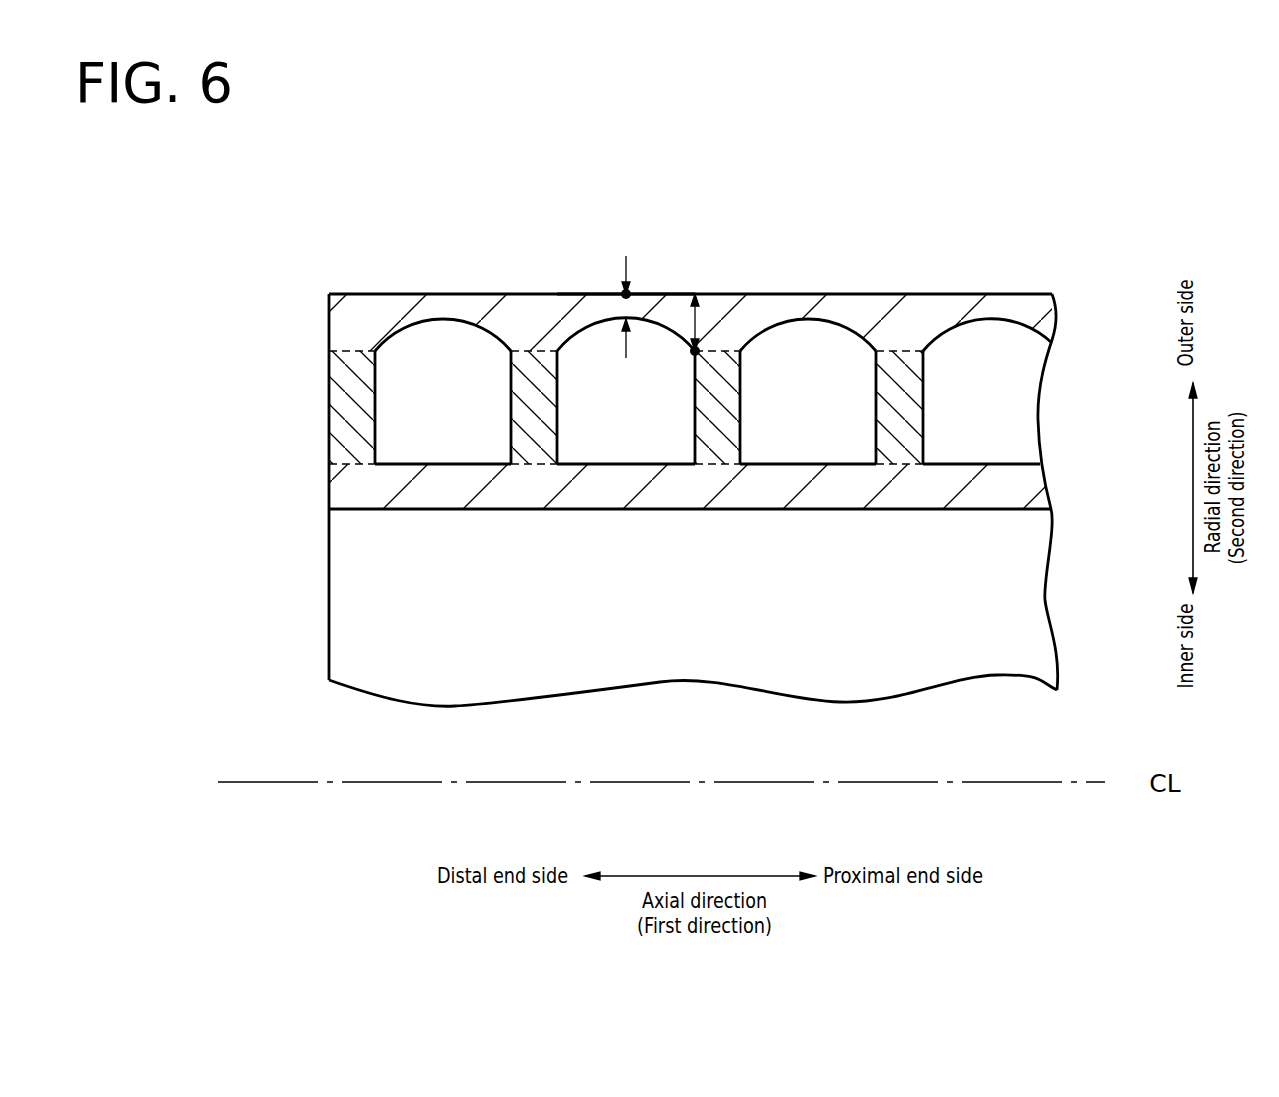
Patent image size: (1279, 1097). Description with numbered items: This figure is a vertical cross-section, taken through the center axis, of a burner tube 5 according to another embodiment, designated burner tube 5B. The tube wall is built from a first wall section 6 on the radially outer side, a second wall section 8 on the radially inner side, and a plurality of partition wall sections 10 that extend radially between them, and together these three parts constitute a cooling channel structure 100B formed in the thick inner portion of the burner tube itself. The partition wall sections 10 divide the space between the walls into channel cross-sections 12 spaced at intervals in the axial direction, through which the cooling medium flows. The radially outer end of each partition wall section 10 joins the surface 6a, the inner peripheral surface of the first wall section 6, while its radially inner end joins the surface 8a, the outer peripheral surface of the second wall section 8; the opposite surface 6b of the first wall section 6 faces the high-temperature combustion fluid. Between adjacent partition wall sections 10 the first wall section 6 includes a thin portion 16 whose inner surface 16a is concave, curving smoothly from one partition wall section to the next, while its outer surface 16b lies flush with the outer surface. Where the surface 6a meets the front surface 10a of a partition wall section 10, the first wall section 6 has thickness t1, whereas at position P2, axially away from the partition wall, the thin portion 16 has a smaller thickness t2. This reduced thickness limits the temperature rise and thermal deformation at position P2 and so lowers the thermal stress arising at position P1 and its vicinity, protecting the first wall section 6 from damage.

The cooling channel structure 100B is at (1016, 168).
The burner tube 5 is at (922, 134).
The burner tube 5B is at (693, 382).
The first wall section 6 is at (463, 308).
The surface of the first wall section 6a is at (681, 336).
The surface of the first wall section 6b is at (492, 294).
The second wall section 8 is at (618, 497).
The surface of the second wall section 8a is at (632, 463).
The partition wall section 10 is at (376, 422).
The front surface of the partition wall section 10a is at (713, 422).
The channel cross-section 12 is at (442, 427).
The thin portion 16 is at (437, 294).
The surface of the thin portion 16a is at (575, 335).
The surface of the thin portion 16b is at (597, 312).
The position P1 is at (695, 351).
The position P2 is at (626, 294).
The thickness t1 is at (697, 320).
The thickness t2 is at (630, 310).